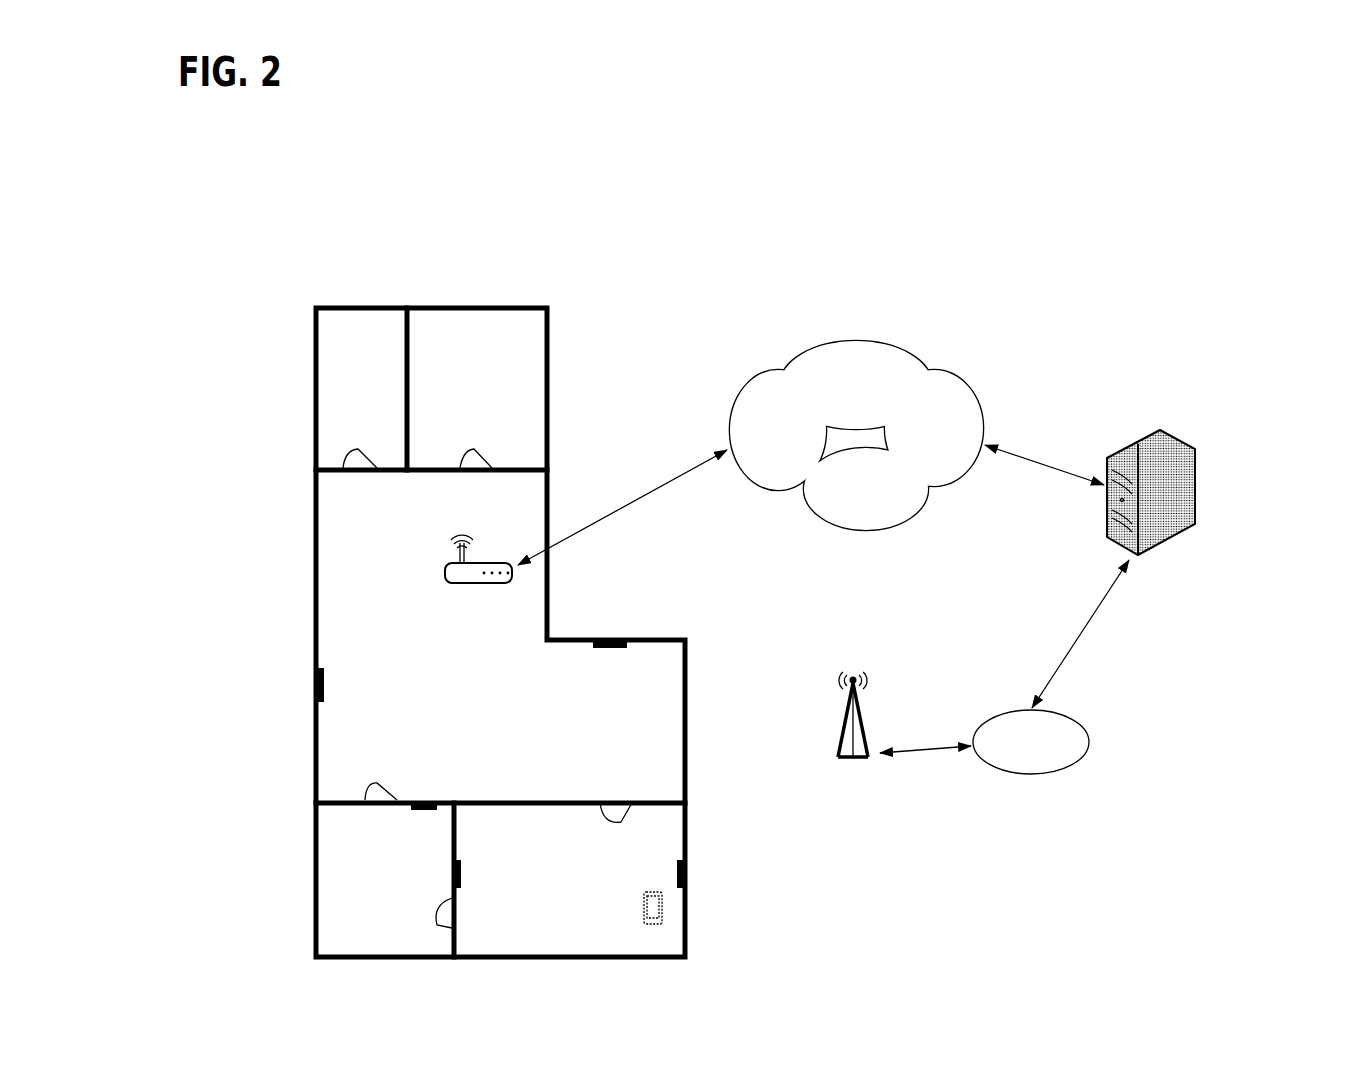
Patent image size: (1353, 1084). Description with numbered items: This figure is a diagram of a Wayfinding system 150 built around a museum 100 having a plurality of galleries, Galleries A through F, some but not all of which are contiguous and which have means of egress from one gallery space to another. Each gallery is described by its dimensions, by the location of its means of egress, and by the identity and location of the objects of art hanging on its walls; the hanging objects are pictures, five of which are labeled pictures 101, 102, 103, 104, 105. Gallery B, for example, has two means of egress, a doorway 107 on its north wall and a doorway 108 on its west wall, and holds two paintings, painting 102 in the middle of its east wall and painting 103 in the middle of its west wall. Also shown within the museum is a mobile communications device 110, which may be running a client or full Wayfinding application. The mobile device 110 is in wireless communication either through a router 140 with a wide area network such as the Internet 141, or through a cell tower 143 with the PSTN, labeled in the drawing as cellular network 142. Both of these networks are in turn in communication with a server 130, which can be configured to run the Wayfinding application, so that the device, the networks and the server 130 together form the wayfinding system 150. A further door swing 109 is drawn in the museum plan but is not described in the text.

The wayfinding system 150 is at (726, 497).
The museum 100 is at (492, 587).
The picture 101 is at (608, 638).
The painting 102 is at (688, 878).
The painting 103 is at (460, 866).
The picture 104 is at (426, 812).
The picture 105 is at (314, 700).
The doorway 107 is at (603, 818).
The doorway 108 is at (450, 903).
The door swing 109 is at (385, 790).
The mobile communications device 110 is at (647, 925).
The server 130 is at (1196, 466).
The router 140 is at (445, 577).
The Internet 141 is at (856, 435).
The cellular network 142 is at (963, 741).
The cell tower 143 is at (862, 712).